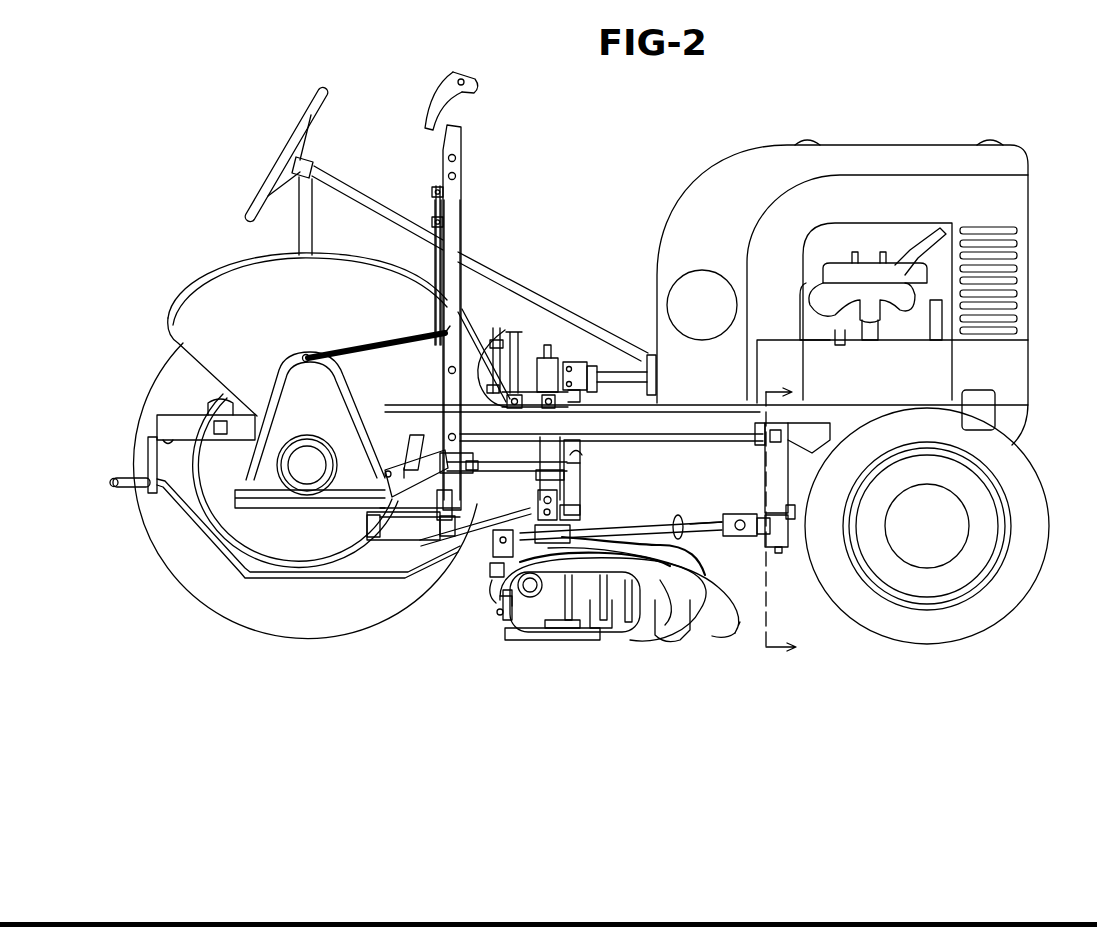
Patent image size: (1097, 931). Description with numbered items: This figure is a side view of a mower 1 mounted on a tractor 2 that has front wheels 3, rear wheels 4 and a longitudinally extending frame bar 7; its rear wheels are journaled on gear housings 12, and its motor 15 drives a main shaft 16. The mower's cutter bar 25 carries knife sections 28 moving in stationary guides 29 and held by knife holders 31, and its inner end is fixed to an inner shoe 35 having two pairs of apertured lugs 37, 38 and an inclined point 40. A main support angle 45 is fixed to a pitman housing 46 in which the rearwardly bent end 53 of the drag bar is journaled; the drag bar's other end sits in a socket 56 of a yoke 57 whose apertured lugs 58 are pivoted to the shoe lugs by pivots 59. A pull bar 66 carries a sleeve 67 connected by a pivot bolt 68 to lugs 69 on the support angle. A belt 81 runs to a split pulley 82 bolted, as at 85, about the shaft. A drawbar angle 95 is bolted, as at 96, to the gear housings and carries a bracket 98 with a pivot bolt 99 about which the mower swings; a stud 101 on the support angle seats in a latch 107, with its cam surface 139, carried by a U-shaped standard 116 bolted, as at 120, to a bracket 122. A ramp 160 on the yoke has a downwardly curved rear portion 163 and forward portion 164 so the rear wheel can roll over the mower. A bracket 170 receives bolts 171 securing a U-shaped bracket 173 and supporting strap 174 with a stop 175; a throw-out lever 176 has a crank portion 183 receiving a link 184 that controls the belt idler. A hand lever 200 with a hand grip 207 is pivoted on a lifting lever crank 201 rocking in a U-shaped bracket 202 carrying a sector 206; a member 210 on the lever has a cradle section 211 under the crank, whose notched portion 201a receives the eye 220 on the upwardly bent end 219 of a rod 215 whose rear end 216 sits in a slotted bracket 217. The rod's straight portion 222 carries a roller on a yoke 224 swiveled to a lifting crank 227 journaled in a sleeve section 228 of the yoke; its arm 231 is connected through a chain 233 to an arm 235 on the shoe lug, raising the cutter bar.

The mower 1 is at (470, 636).
The tractor 2 is at (652, 180).
The front wheels 3 is at (1032, 508).
The rear wheels 4 is at (157, 537).
The frame bar 7 is at (682, 413).
The gear housing 12 is at (347, 430).
The motor 15 is at (893, 238).
The main shaft 16 is at (621, 382).
The cutter bar 25 is at (535, 645).
The knife sections 28 is at (600, 632).
The stationary guides 29 is at (613, 628).
The knife holders 31 is at (553, 636).
The inner shoe 35 is at (510, 646).
The apertured lugs 37 is at (505, 600).
The apertured lugs 38 is at (651, 622).
The point 40 is at (706, 580).
The main support angle 45 is at (626, 528).
The housing 46 is at (415, 556).
The rearwardly bent end 53 is at (496, 520).
The socket 56 is at (545, 588).
The yoke 57 is at (623, 571).
The apertured lugs 58 is at (503, 618).
The pivots 59 is at (560, 596).
The pull bar 66 is at (664, 527).
The sleeve 67 is at (701, 518).
The pivot bolt 68 is at (760, 534).
The lugs 69 is at (748, 514).
The belt 81 is at (553, 452).
The split pulley 82 is at (566, 368).
The bolt 85 is at (590, 376).
The drawbar angle 95 is at (385, 473).
The bolt 96 is at (388, 485).
The bracket 98 is at (452, 500).
The pivot bolt 99 is at (425, 468).
The bar or stud 101 is at (795, 512).
The latch 107 is at (783, 553).
The standard 116 is at (767, 459).
The bolt 120 is at (781, 425).
The bracket 122 is at (815, 421).
The cam surface 139 is at (790, 536).
The ramp 160 is at (658, 542).
The rear portion 163 is at (470, 560).
The forward portion 164 is at (692, 590).
The bracket 170 is at (526, 408).
The bolts 171 is at (541, 356).
The U-shaped bracket 173 is at (573, 396).
The supporting strap 174 is at (452, 372).
The stop 175 is at (470, 378).
The throw-out lever 176 is at (492, 336).
The crank portion 183 is at (516, 335).
The link 184 is at (519, 352).
The hand lever 200 is at (464, 190).
The lifting lever crank 201 is at (508, 468).
The notched portion 201a is at (583, 466).
The U-shaped bracket 202 is at (404, 466).
The sector 206 is at (446, 412).
The hand grip 207 is at (428, 125).
The member 210 is at (459, 452).
The section 211 is at (478, 464).
The rod 215 is at (369, 577).
The rear end 216 is at (130, 480).
The slotted bracket 217 is at (150, 440).
The upwardly bent end 219 is at (582, 490).
The eye 220 is at (578, 456).
The straight portion 222 is at (532, 520).
The yoke 224 is at (577, 506).
The lifting crank 227 is at (562, 532).
The sleeve section 228 is at (530, 510).
The arm 231 is at (496, 550).
The chain 233 is at (492, 572).
The arm 235 is at (492, 590).